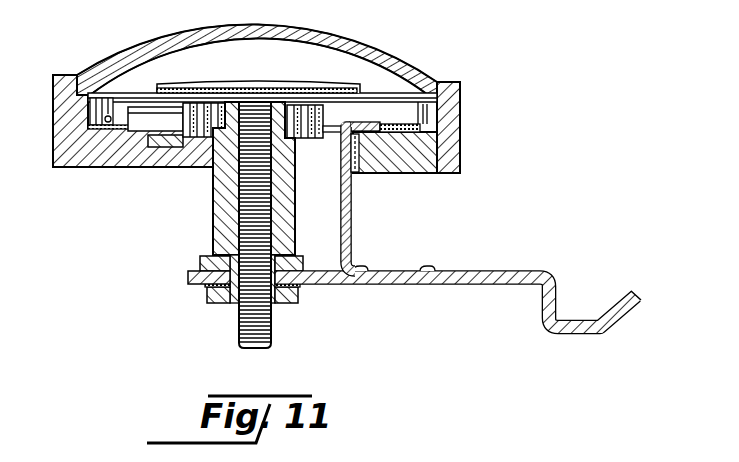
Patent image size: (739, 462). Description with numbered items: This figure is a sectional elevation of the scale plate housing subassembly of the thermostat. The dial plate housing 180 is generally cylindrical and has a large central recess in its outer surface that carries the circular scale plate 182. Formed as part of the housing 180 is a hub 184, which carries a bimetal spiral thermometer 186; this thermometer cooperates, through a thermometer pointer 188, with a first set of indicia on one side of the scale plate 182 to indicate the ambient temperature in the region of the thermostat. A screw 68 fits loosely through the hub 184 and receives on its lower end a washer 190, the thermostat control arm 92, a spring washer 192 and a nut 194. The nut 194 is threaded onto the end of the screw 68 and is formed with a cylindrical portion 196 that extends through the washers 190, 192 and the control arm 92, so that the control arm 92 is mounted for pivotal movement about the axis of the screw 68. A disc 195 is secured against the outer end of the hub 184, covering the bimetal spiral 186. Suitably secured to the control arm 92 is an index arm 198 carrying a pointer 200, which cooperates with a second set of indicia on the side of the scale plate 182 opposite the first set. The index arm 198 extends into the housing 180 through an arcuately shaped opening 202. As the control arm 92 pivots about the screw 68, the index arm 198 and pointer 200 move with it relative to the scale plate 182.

The screw 68 is at (238, 323).
The thermostat control arm 92 is at (188, 276).
The dial plate housing 180 is at (460, 114).
The scale plate 182 is at (90, 160).
The hub 184 is at (214, 199).
The bimetal spiral thermometer 186 is at (310, 107).
The thermometer pointer 188 is at (148, 110).
The washer 190 is at (203, 262).
The spring washer 192 is at (203, 288).
The nut 194 is at (208, 300).
The disc 195 is at (271, 81).
The cylindrical portion 196 is at (298, 258).
The index arm 198 is at (351, 210).
The pointer 200 is at (378, 119).
The arcuately shaped opening 202 is at (356, 174).